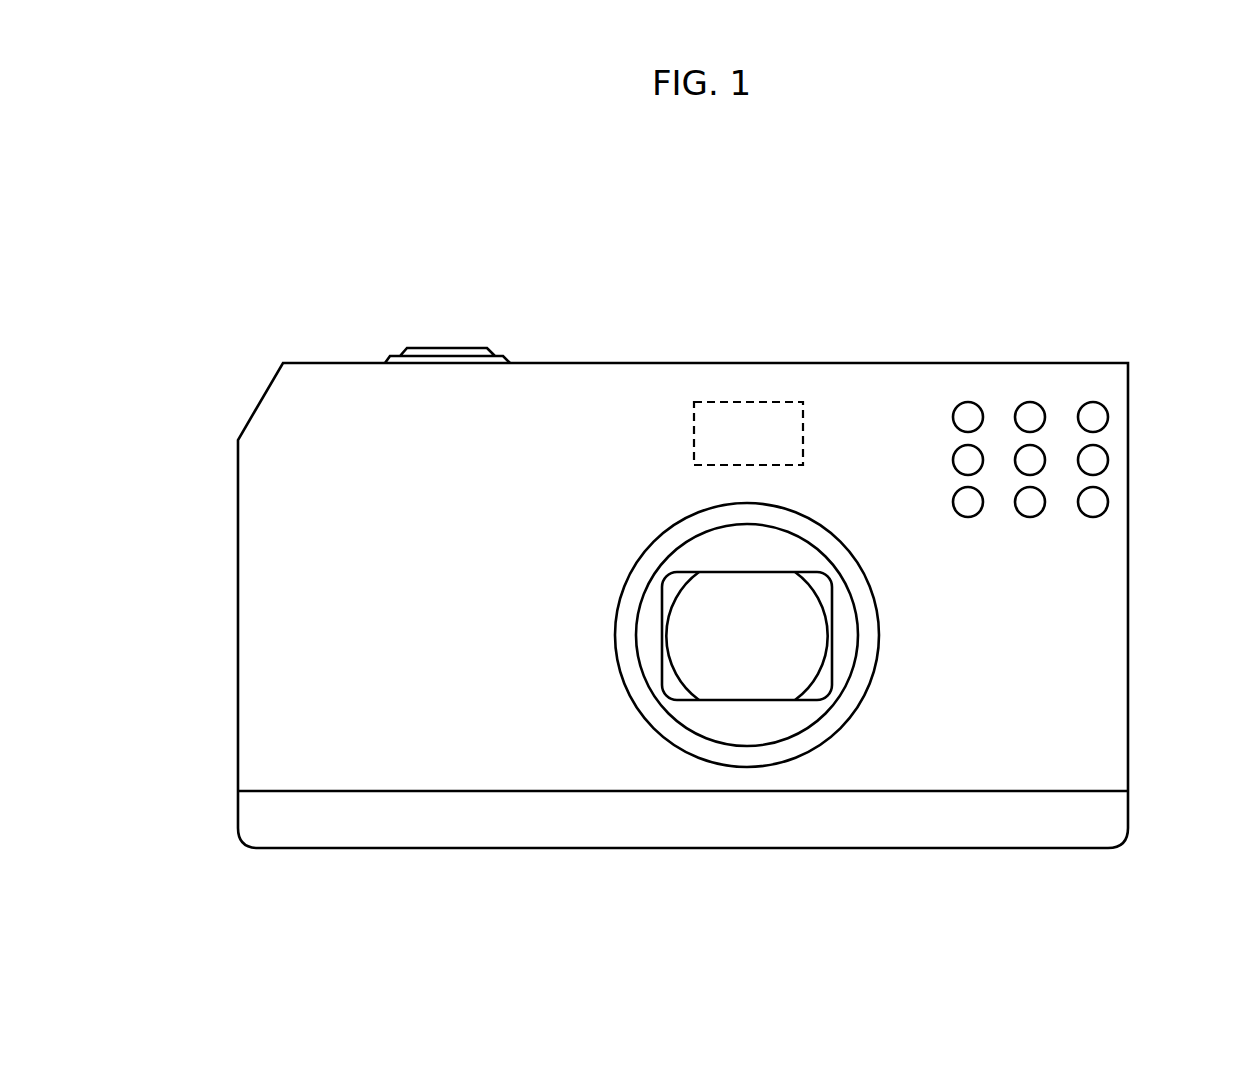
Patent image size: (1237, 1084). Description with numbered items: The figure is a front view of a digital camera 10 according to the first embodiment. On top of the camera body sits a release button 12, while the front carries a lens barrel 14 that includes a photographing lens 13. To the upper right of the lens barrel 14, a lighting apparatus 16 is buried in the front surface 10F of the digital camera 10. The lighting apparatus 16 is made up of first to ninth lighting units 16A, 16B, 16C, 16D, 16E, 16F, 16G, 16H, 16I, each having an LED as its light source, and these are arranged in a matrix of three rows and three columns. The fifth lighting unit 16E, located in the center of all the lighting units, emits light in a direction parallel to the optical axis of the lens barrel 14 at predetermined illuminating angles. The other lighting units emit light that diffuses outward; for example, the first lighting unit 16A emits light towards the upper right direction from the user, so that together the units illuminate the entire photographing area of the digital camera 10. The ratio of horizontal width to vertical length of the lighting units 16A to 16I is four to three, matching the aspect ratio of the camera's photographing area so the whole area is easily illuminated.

The digital camera 10 is at (793, 280).
The front surface 10F is at (1092, 722).
The release button 12 is at (448, 347).
The photographing lens 13 is at (748, 665).
The lens barrel 14 is at (598, 665).
The lighting apparatus 16 is at (1132, 345).
The first lighting unit 16A is at (968, 402).
The second lighting unit 16B is at (1030, 402).
The third lighting unit 16C is at (1108, 417).
The fourth lighting unit 16D is at (953, 460).
The fifth lighting unit 16E is at (1040, 472).
The sixth lighting unit 16F is at (1108, 460).
The seventh lighting unit 16G is at (968, 517).
The eighth lighting unit 16H is at (1030, 517).
The ninth lighting unit 16I is at (1108, 501).